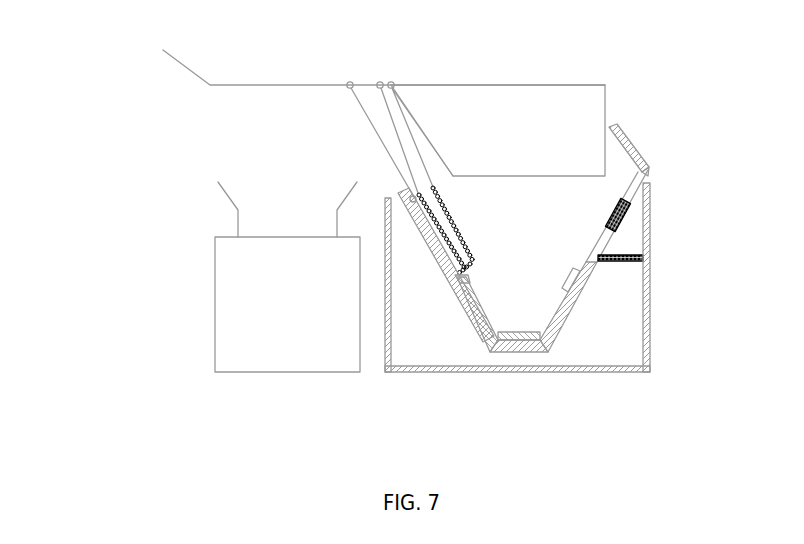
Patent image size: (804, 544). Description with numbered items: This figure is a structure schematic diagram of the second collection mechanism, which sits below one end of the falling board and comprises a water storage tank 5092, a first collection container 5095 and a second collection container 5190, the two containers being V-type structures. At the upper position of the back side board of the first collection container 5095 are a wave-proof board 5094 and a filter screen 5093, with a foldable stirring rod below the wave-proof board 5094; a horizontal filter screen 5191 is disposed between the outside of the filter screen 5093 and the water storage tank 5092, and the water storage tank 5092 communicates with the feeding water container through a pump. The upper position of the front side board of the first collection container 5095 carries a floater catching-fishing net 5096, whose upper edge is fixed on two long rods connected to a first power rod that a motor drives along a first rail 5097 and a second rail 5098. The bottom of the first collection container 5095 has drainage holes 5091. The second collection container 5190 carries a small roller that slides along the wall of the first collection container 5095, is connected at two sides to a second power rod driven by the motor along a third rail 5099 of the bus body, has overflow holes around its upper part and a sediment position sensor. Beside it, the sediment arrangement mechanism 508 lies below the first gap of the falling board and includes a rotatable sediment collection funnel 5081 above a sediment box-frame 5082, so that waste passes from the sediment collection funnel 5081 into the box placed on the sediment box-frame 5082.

The sediment arrangement mechanism 508 is at (129, 216).
The sediment collection funnel 5081 is at (228, 196).
The sediment box-frame 5082 is at (216, 304).
The first rail 5097 is at (265, 85).
The second rail 5098 is at (548, 85).
The third rail 5099 is at (400, 171).
The floater catching-fishing net 5096 is at (421, 232).
The drainage holes 5091 is at (482, 333).
The first collection container 5095 is at (527, 350).
The second collection container 5190 is at (457, 297).
The wave-proof board 5094 is at (648, 170).
The filter screen 5093 is at (625, 218).
The horizontal filter screen 5191 is at (622, 262).
The water storage tank 5092 is at (650, 368).